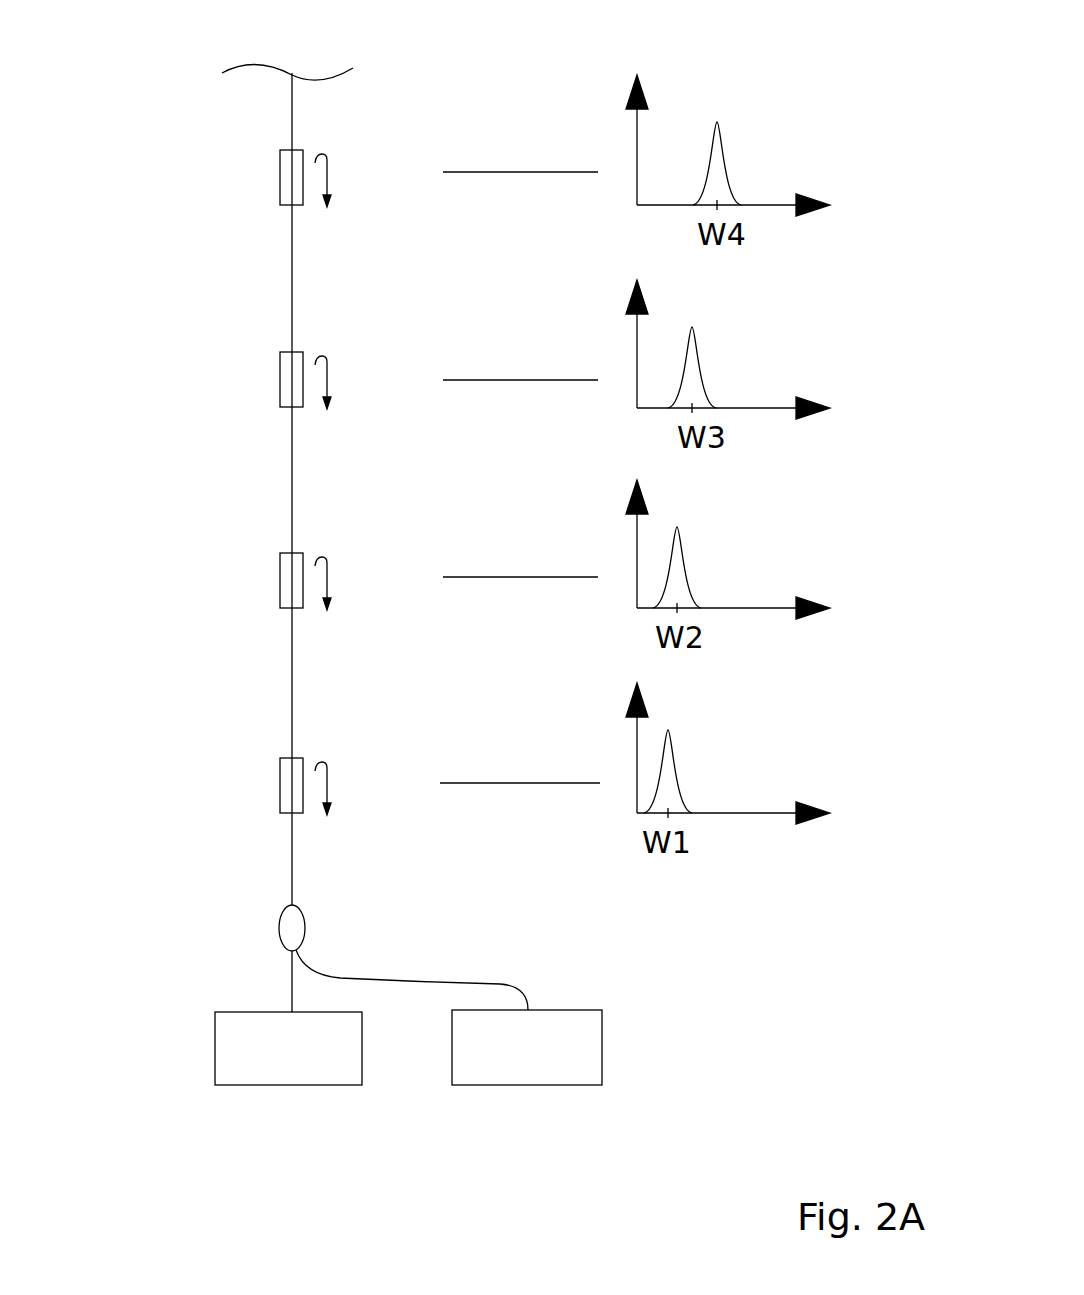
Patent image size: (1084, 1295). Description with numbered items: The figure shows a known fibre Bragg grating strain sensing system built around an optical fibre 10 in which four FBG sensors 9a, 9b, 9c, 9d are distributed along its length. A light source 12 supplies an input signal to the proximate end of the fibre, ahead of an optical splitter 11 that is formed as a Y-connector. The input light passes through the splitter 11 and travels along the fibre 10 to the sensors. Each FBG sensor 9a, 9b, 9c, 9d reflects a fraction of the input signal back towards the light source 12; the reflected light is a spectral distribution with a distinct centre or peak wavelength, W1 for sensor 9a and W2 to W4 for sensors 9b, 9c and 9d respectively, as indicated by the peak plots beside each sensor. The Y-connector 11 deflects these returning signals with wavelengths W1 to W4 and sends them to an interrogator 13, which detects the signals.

The FBG sensor 9a is at (280, 780).
The FBG sensor 9b is at (280, 575).
The FBG sensor 9c is at (280, 374).
The FBG sensor 9d is at (280, 172).
The optical fibre 10 is at (292, 488).
The optical splitter 11 is at (280, 932).
The light source 12 is at (215, 1058).
The interrogator 13 is at (602, 1040).